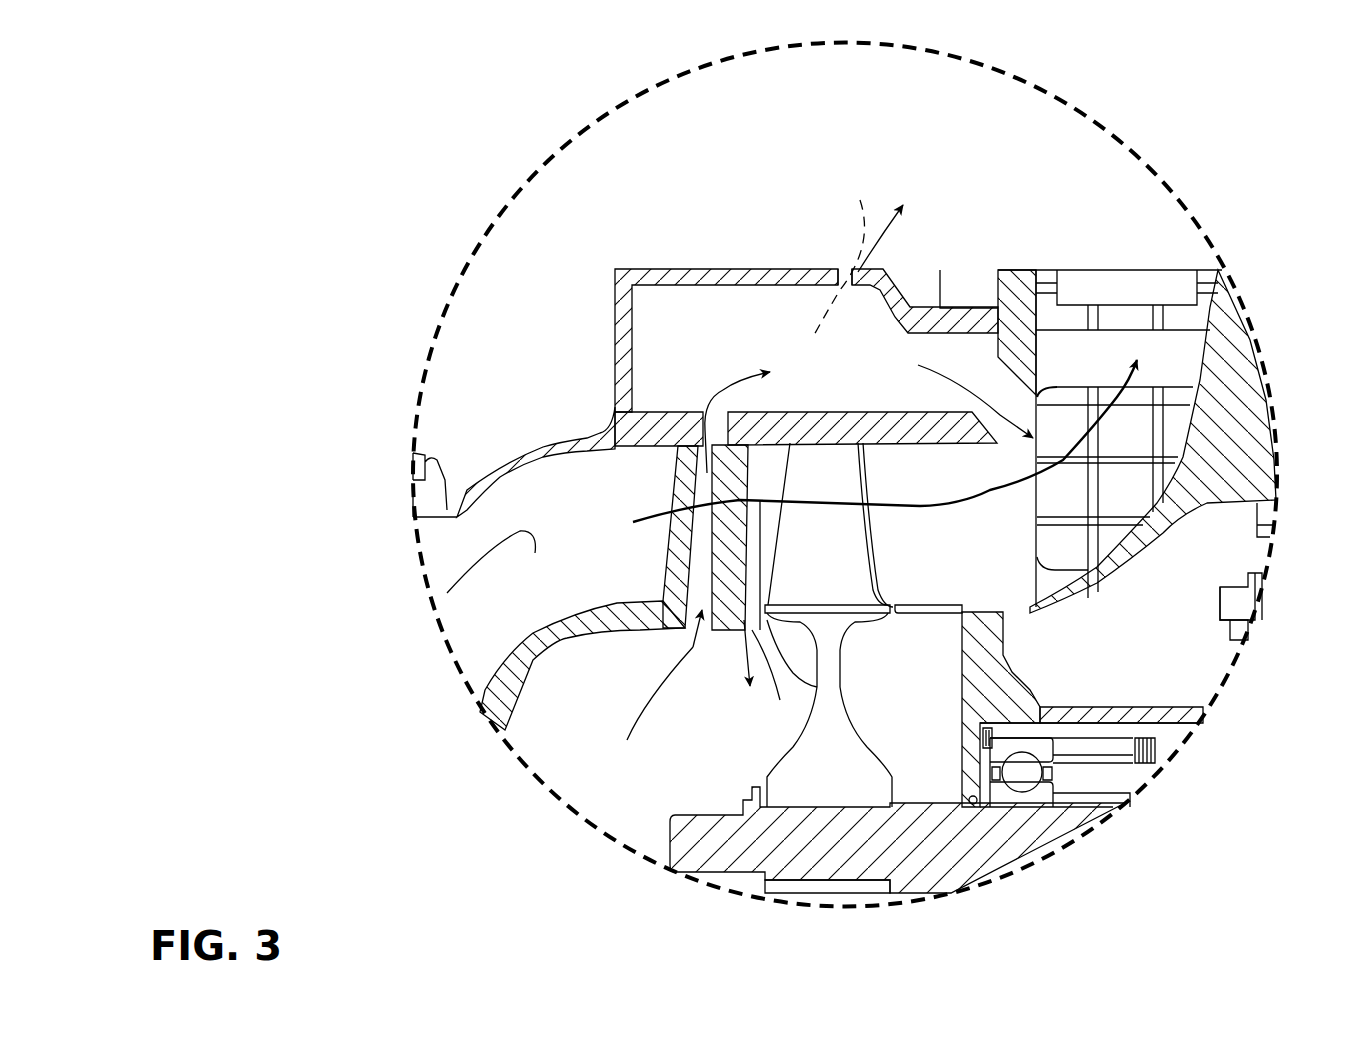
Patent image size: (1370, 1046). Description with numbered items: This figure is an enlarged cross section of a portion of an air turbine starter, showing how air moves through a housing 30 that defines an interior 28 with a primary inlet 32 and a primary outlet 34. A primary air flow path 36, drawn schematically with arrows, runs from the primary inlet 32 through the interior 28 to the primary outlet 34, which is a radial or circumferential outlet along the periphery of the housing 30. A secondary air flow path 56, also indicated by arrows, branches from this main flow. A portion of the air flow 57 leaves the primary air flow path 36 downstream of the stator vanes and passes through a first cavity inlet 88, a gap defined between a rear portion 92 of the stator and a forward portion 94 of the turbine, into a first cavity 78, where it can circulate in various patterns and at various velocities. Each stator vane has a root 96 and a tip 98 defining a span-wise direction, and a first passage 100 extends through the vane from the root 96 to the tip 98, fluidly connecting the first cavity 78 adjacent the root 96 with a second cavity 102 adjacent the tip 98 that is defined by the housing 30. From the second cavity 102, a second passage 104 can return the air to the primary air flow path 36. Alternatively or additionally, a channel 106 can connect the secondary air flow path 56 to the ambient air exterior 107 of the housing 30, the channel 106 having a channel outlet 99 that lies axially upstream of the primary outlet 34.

The interior 28 is at (594, 500).
The housing 30 is at (730, 262).
The primary inlet 32 is at (383, 541).
The primary outlet 34 is at (1180, 265).
The primary air flow path 36 is at (615, 528).
The secondary air flow path 56 is at (723, 390).
The portion of the air flow 57 is at (768, 528).
The first cavity 78 is at (596, 730).
The first cavity inlet 88 is at (748, 626).
The rear portion 92 is at (733, 625).
The forward portion 94 is at (758, 618).
The root 96 is at (587, 612).
The tip 98 is at (613, 449).
The channel outlet 99 is at (833, 262).
The first passage 100 is at (663, 602).
The second cavity 102 is at (756, 333).
The second passage 104 is at (1033, 365).
The channel 106 is at (903, 238).
The ambient air exterior 107 is at (848, 118).